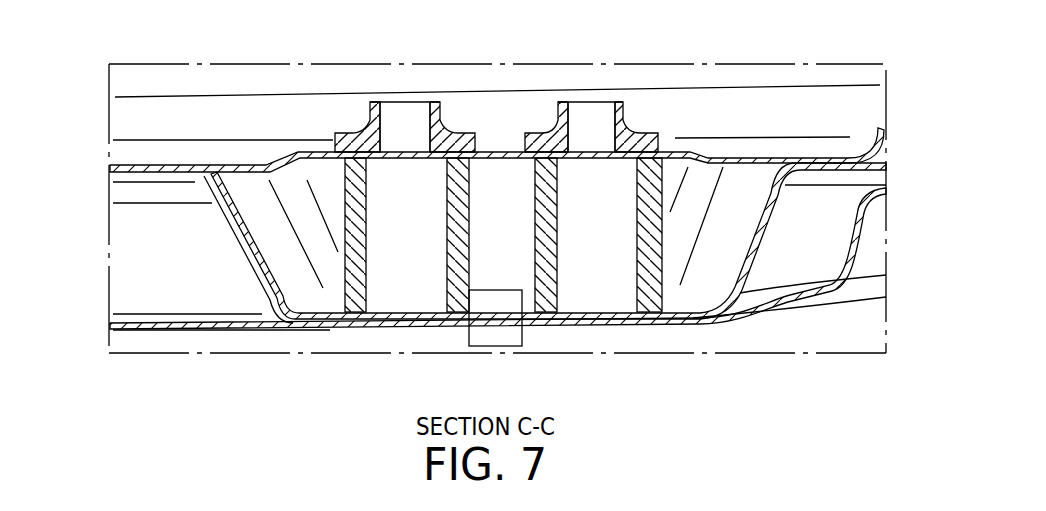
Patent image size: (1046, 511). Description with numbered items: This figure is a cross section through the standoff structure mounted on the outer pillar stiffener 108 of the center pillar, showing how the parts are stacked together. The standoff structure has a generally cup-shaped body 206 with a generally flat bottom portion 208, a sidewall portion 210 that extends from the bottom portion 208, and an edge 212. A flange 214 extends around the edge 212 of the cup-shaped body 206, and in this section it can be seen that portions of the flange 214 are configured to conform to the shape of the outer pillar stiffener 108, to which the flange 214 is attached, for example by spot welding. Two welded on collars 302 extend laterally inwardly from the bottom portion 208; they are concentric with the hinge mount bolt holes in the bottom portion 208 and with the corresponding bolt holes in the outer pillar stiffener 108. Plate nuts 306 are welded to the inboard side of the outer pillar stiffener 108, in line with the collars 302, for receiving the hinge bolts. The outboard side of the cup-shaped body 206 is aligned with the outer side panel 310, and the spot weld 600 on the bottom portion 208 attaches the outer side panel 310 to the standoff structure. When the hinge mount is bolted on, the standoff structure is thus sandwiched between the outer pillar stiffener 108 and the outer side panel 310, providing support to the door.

The outer pillar stiffener 108 is at (868, 140).
The cup-shaped body 206 is at (862, 253).
The bottom portion 208 is at (310, 322).
The sidewall portion 210 is at (273, 238).
The edge 212 is at (207, 182).
The flange 214 is at (137, 180).
The welded on collars 302 is at (543, 188).
The plate nuts 306 is at (370, 123).
The outer side panel 310 is at (768, 305).
The spot weld 600 is at (478, 335).